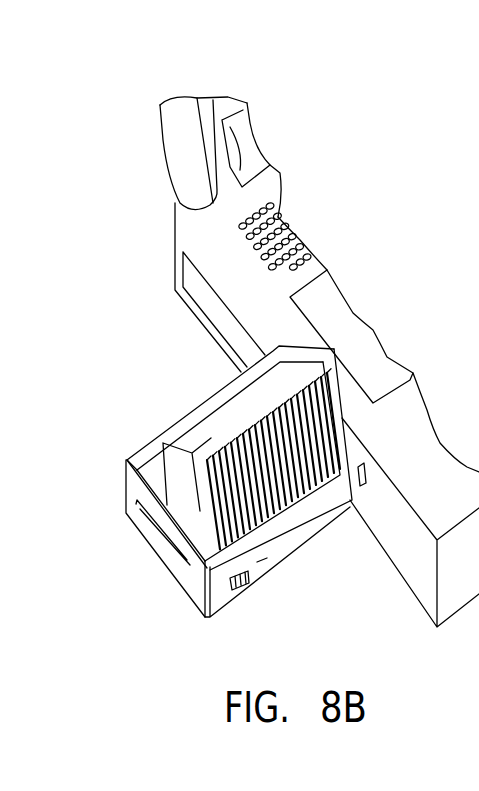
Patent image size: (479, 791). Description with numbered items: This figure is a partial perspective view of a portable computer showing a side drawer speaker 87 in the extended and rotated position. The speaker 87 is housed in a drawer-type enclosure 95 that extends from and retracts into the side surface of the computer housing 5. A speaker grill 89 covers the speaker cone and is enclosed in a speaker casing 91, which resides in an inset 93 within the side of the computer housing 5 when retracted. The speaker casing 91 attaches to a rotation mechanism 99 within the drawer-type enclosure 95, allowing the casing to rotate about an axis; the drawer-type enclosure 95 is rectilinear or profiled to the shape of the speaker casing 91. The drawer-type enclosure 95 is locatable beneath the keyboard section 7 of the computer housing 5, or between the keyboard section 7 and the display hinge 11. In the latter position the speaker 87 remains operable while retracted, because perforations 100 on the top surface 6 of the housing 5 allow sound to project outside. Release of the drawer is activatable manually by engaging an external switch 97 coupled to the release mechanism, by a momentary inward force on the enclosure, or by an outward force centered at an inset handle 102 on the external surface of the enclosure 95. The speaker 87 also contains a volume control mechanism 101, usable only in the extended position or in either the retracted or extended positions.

The computer housing 5 is at (407, 590).
The top surface 6 is at (217, 236).
The keyboard section 7 is at (387, 353).
The display hinge 11 is at (240, 133).
The speaker 87 is at (187, 387).
The speaker grill 89 is at (275, 503).
The speaker casing 91 is at (176, 467).
The inset 93 is at (347, 453).
The drawer-type enclosure 95 is at (132, 477).
The external switch 97 is at (364, 466).
The rotation mechanism 99 is at (199, 576).
The perforations 100 is at (284, 234).
The volume control mechanism 101 is at (243, 583).
The inset handle 102 is at (153, 530).